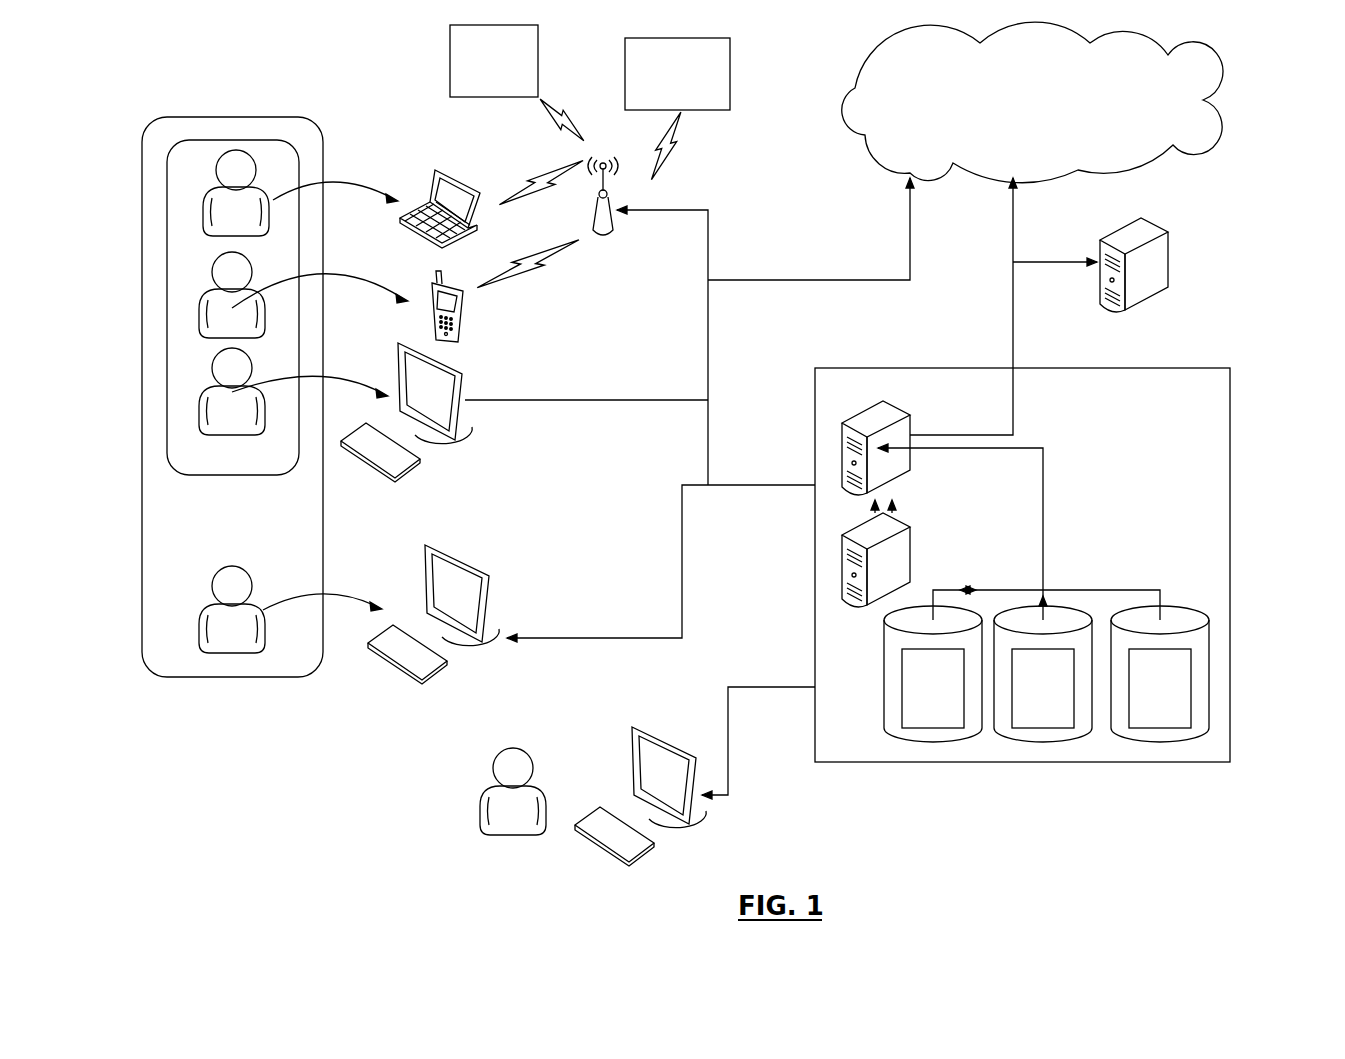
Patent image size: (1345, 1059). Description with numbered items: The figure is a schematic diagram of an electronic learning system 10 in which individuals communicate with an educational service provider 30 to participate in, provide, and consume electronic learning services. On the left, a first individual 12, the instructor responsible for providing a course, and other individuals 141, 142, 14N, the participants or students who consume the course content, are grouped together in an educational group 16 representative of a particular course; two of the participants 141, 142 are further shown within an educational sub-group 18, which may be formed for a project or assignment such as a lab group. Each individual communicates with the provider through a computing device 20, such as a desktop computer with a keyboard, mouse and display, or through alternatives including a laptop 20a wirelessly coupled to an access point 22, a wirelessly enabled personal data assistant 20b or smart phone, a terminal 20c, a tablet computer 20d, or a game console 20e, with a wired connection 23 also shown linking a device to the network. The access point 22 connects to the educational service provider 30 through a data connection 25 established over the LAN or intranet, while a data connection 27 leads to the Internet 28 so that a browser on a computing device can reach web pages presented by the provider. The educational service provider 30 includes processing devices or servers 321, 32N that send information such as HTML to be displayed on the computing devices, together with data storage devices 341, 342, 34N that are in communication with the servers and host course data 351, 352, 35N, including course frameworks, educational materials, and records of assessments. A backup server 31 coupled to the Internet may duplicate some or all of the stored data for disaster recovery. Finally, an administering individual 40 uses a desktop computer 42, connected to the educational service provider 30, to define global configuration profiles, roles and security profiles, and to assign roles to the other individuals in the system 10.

The electronic learning system 10 is at (176, 80).
The individual 12 is at (200, 610).
The individual 141 is at (208, 190).
The individual 142 is at (205, 292).
The individual 14N is at (205, 392).
The educational group 16 is at (142, 485).
The educational sub-group 18 is at (272, 140).
The computing device 20 is at (490, 612).
The laptop 20a is at (452, 172).
The wirelessly enabled personal data assistant 20b is at (460, 282).
The terminal 20c is at (472, 437).
The tablet computer 20d is at (450, 60).
The game console 20e is at (680, 37).
The access point 22 is at (604, 236).
The wired connection 23 is at (580, 400).
The data connection 25 is at (775, 485).
The data connection 27 is at (832, 280).
The Internet 28 is at (852, 78).
The educational service provider 30 is at (835, 368).
The backup server 31 is at (1140, 240).
The processing device 321 is at (900, 410).
The processing device 32N is at (912, 548).
The data storage device 341 is at (908, 709).
The data storage device 342 is at (1078, 677).
The data storage device 34N is at (1199, 659).
The data 351 is at (920, 728).
The data 352 is at (1038, 728).
The data 35N is at (1192, 688).
The individual 40 is at (487, 790).
The desktop computer 42 is at (712, 820).